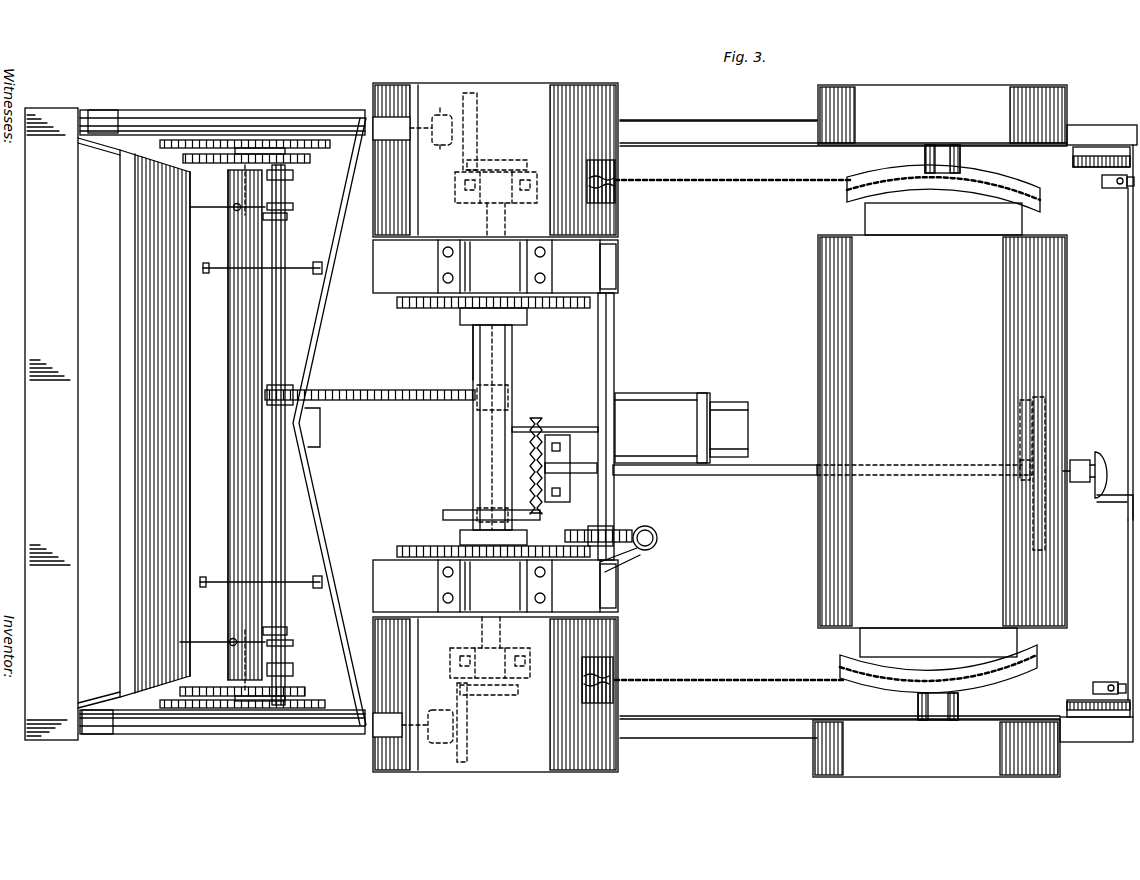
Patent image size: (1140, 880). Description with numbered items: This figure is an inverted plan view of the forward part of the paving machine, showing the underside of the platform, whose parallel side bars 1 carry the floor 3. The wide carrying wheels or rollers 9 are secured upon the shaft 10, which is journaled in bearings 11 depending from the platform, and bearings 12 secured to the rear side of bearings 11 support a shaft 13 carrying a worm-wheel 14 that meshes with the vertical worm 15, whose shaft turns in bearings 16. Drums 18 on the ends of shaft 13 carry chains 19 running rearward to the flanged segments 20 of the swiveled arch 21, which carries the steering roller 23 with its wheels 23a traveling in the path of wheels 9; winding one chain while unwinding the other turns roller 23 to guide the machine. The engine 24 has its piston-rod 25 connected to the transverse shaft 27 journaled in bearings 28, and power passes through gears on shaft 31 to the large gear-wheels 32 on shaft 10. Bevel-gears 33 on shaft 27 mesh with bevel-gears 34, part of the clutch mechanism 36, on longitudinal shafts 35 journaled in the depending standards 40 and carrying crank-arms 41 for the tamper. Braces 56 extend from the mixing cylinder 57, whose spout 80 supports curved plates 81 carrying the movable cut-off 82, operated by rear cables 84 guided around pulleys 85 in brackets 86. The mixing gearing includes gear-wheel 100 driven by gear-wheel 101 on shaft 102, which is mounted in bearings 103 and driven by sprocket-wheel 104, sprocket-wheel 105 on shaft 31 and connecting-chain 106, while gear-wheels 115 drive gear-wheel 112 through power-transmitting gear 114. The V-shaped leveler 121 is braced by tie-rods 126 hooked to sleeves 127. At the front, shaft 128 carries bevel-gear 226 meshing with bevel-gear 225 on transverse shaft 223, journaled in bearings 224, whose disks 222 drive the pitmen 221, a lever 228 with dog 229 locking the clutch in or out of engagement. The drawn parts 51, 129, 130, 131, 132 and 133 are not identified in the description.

The side bars 1 is at (705, 115).
The floor 3 is at (718, 240).
The carrying wheels or rollers 9 is at (572, 86).
The shaft 10 is at (473, 449).
The bearings 11 is at (478, 272).
The bearings 12 is at (595, 426).
The shaft 13 is at (615, 327).
The worm-wheel 14 is at (622, 530).
The vertical worm 15 is at (658, 537).
The bearings 16 is at (630, 558).
The drums 18 is at (618, 200).
The chains 19 is at (765, 181).
The flanged segments 20 is at (996, 175).
The arch 21 is at (941, 430).
The roller 23 is at (942, 431).
The wheels 23a is at (940, 431).
The engine 24 is at (681, 428).
The piston-rod 25 is at (575, 427).
The transverse shaft 27 is at (508, 213).
The bearings 28 is at (472, 203).
The shaft 31 is at (473, 355).
The large gear-wheels 32 is at (397, 308).
The bevel-gears 33 is at (492, 704).
The bevel-gears 34 is at (480, 748).
The longitudinal shafts 35 is at (150, 122).
The clutch mechanism 36 is at (442, 112).
The depending standards 40 is at (402, 427).
The crank-arms 41 is at (110, 110).
The side board 51 is at (51, 424).
The braces 56 is at (108, 147).
The cylinder 57 is at (230, 425).
The spout 80 is at (120, 432).
The curved plates 81 is at (205, 209).
The movable bottom or cut-off 82 is at (194, 252).
The rear cables 84 is at (241, 427).
The pulleys 85 is at (293, 206).
The brackets 86 is at (288, 217).
The gear-wheel 100 is at (185, 120).
The gear-wheel 101 is at (318, 120).
The shaft 102 is at (286, 295).
The bearings 103 is at (293, 178).
The sprocket-wheel 104 is at (298, 389).
The sprocket-wheel 105 is at (512, 398).
The connecting-chain 106 is at (414, 401).
The gear-wheel 112 is at (205, 655).
The power-transmitting gear 114 is at (248, 165).
The gear-wheels 115 is at (306, 158).
The V-shaped leveler 121 is at (326, 452).
The tie-rods 126 is at (312, 266).
The sleeves 127 is at (208, 275).
The shaft 128 is at (798, 466).
The bracket 129 is at (560, 502).
The gear 130 is at (1046, 425).
The worm 131 is at (536, 418).
The collar 132 is at (458, 510).
The gear 133 is at (1033, 410).
The pitmen 221 is at (1118, 148).
The disks 222 is at (1090, 162).
The transverse shaft 223 is at (1112, 431).
The bearings 224 is at (1122, 187).
The bevel-gear 225 is at (1119, 520).
The bevel-gear 226 is at (1101, 452).
The lever 228 is at (1080, 460).
The dog 229 is at (1080, 483).